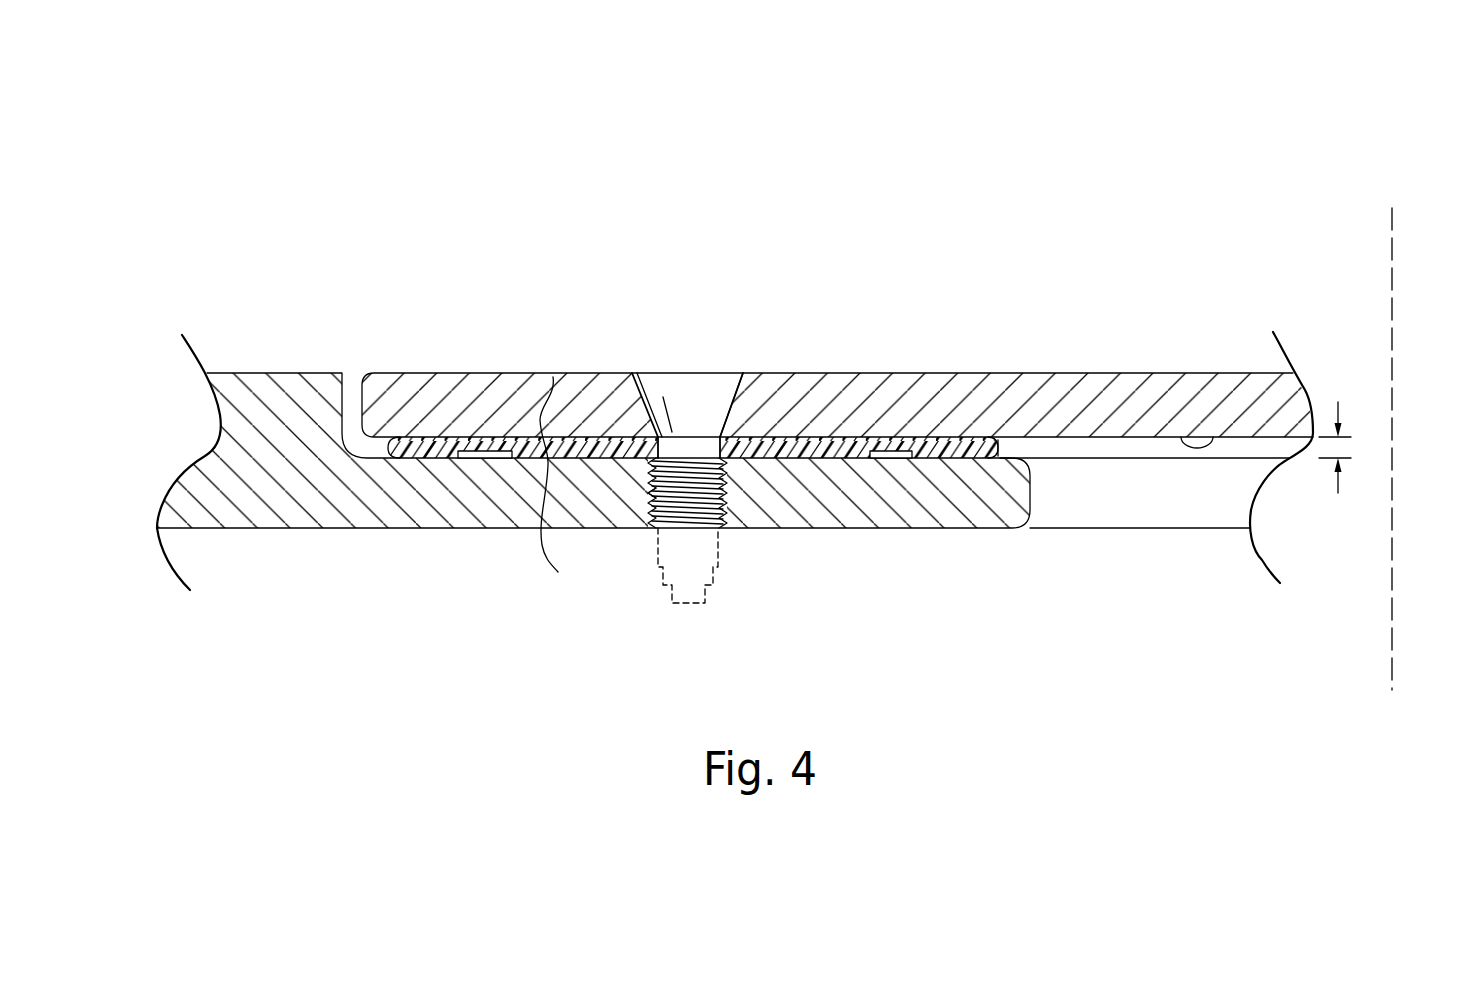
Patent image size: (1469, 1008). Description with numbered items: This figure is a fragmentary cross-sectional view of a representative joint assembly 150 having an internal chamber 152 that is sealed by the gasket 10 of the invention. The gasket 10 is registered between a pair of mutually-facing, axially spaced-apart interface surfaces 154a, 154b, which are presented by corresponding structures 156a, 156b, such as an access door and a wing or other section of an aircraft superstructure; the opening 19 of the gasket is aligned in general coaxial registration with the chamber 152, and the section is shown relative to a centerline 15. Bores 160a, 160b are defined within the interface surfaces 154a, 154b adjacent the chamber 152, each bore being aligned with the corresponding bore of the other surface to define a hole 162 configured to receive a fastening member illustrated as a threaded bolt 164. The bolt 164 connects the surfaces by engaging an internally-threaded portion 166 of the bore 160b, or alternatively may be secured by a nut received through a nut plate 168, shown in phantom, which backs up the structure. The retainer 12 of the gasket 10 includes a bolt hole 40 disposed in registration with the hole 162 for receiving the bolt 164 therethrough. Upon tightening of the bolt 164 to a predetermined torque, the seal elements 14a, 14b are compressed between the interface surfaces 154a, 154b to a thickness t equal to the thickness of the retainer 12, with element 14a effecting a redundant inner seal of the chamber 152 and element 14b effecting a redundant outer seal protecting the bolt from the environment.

The gasket 10 is at (997, 450).
The retainer 12 is at (843, 373).
The seal element 14a is at (925, 440).
The seal element 14b is at (430, 437).
The centerline 15 is at (1395, 248).
The opening 19 is at (1112, 448).
The bolt hole 40 is at (705, 446).
The joint assembly 150 is at (1272, 194).
The internal chamber 152 is at (1167, 503).
The interface surface 154a is at (1213, 437).
The interface surface 154b is at (1003, 450).
The structure 156a is at (1310, 376).
The structure 156b is at (157, 525).
The bore 160a is at (728, 389).
The bore 160b is at (709, 497).
The hole 162 is at (548, 465).
The threaded bolt 164 is at (667, 375).
The internally-threaded portion 166 is at (652, 498).
The nut plate 168 is at (697, 604).
The thickness t is at (1340, 402).